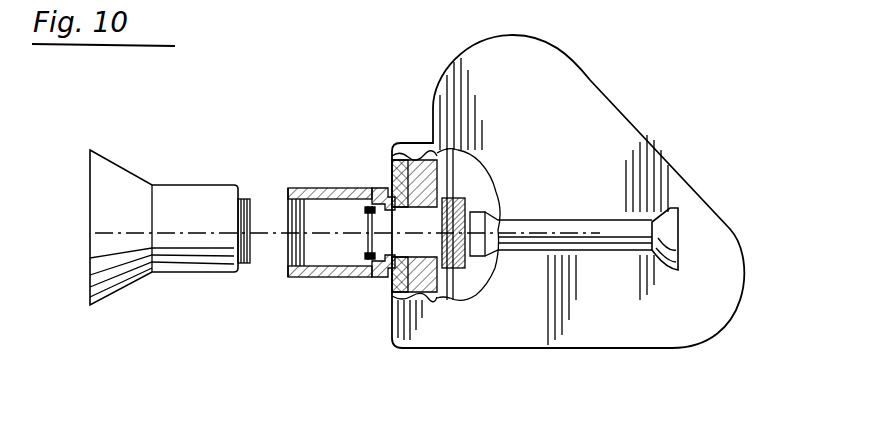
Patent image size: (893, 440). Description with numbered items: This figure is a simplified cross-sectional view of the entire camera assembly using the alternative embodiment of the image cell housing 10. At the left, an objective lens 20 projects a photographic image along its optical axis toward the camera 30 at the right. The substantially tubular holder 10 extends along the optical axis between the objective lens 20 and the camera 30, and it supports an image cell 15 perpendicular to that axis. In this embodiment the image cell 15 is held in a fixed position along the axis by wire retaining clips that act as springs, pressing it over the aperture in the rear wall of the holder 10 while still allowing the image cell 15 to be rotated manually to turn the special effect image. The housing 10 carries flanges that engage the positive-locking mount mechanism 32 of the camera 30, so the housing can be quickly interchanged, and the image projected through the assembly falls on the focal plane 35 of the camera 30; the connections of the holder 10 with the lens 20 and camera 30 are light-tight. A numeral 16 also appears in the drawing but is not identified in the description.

The tubular holder 10 is at (310, 178).
The image cell 15 is at (366, 242).
The retaining plate 16 is at (471, 150).
The objective lens 20 is at (183, 282).
The camera 30 is at (650, 112).
The positive-locking mount mechanism 32 is at (388, 192).
The focal plane 35 is at (482, 197).